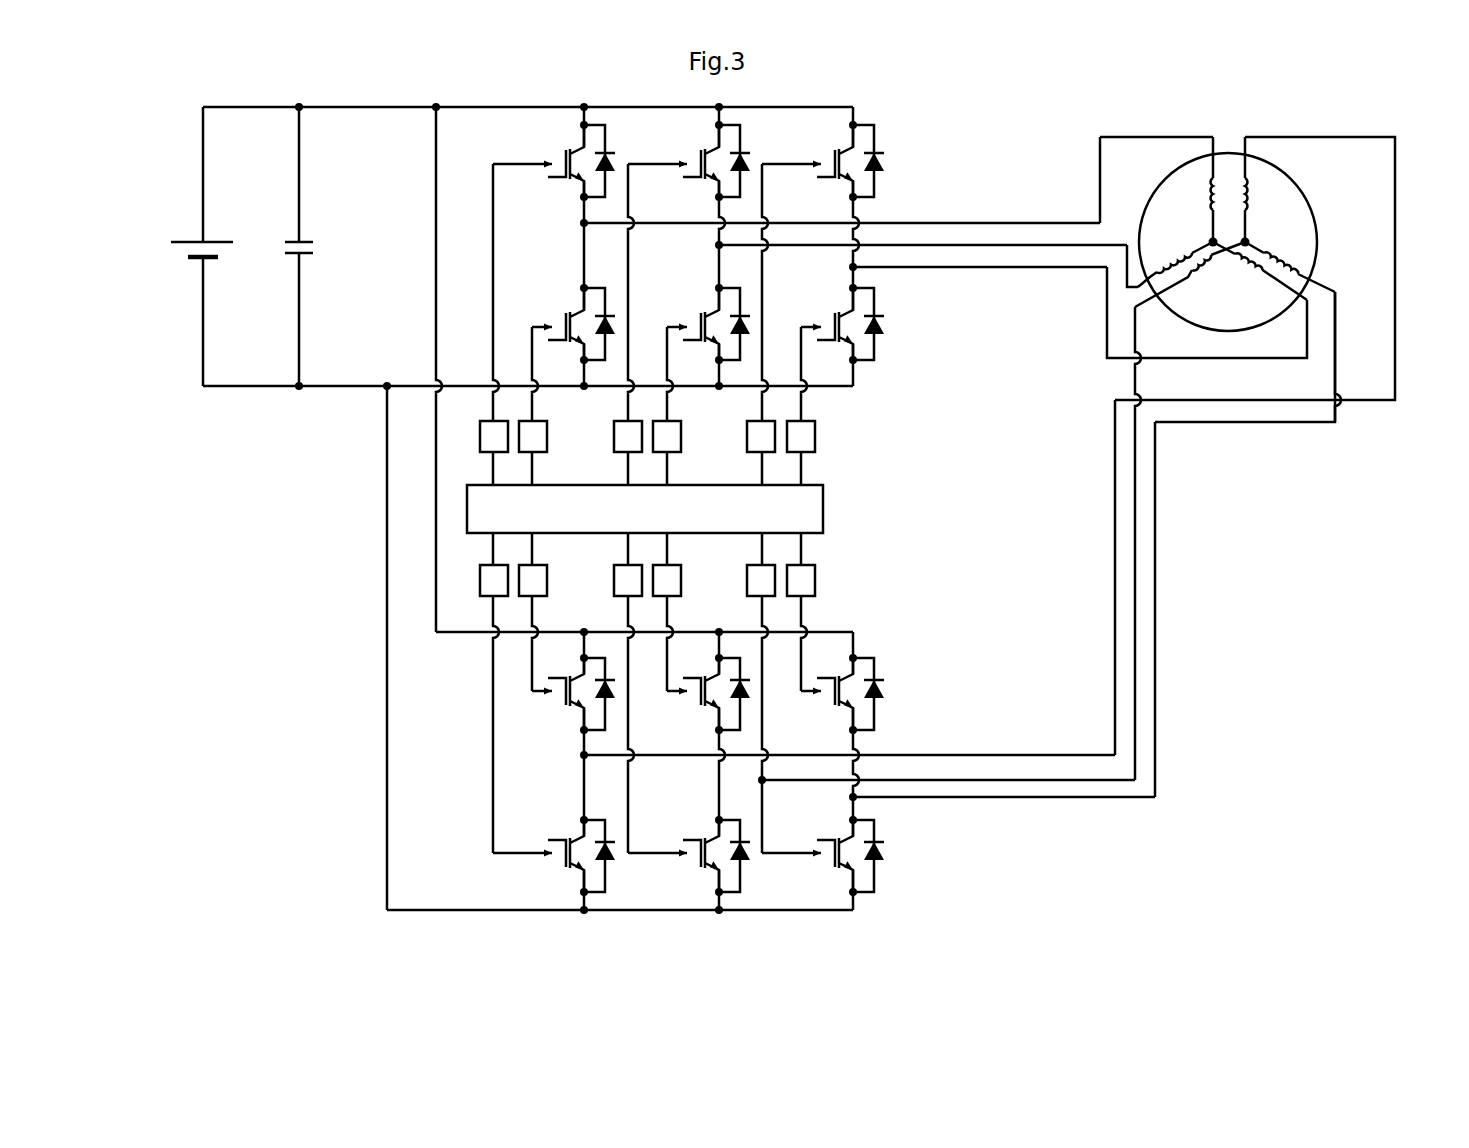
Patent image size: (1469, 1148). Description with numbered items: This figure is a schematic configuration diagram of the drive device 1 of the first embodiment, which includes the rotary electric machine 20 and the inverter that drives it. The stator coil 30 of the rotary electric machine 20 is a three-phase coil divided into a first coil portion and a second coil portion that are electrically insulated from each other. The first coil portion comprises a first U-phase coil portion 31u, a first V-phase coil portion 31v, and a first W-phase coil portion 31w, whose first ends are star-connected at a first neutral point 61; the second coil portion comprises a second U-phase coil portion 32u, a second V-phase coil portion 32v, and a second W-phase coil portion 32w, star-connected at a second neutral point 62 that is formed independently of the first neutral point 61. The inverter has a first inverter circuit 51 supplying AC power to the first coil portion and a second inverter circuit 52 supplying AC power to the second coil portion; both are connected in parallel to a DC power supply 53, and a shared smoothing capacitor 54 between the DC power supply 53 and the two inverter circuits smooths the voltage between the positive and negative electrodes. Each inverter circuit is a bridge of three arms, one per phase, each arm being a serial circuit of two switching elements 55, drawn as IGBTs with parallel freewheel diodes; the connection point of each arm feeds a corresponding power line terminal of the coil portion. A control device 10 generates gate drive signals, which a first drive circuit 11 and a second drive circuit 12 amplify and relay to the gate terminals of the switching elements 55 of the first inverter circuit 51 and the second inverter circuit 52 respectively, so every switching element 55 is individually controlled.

The drive device 1 is at (250, 632).
The control device 10 is at (823, 503).
The first drive circuit 11 is at (494, 452).
The second drive circuit 12 is at (497, 568).
The rotary electric machine 20 is at (1250, 282).
The coil 30 is at (1278, 190).
The first U-phase coil portion 31u is at (1207, 192).
The first V-phase coil portion 31v is at (1158, 252).
The first W-phase coil portion 31w is at (1266, 277).
The second U-phase coil portion 32u is at (1248, 192).
The second V-phase coil portion 32v is at (1205, 275).
The second W-phase coil portion 32w is at (1293, 262).
The first inverter circuit 51 is at (890, 112).
The second inverter circuit 52 is at (868, 642).
The DC power supply 53 is at (187, 240).
The smoothing capacitor 54 is at (290, 238).
The switching element 55 is at (545, 155).
The first neutral point 61 is at (1211, 240).
The second neutral point 62 is at (1247, 240).